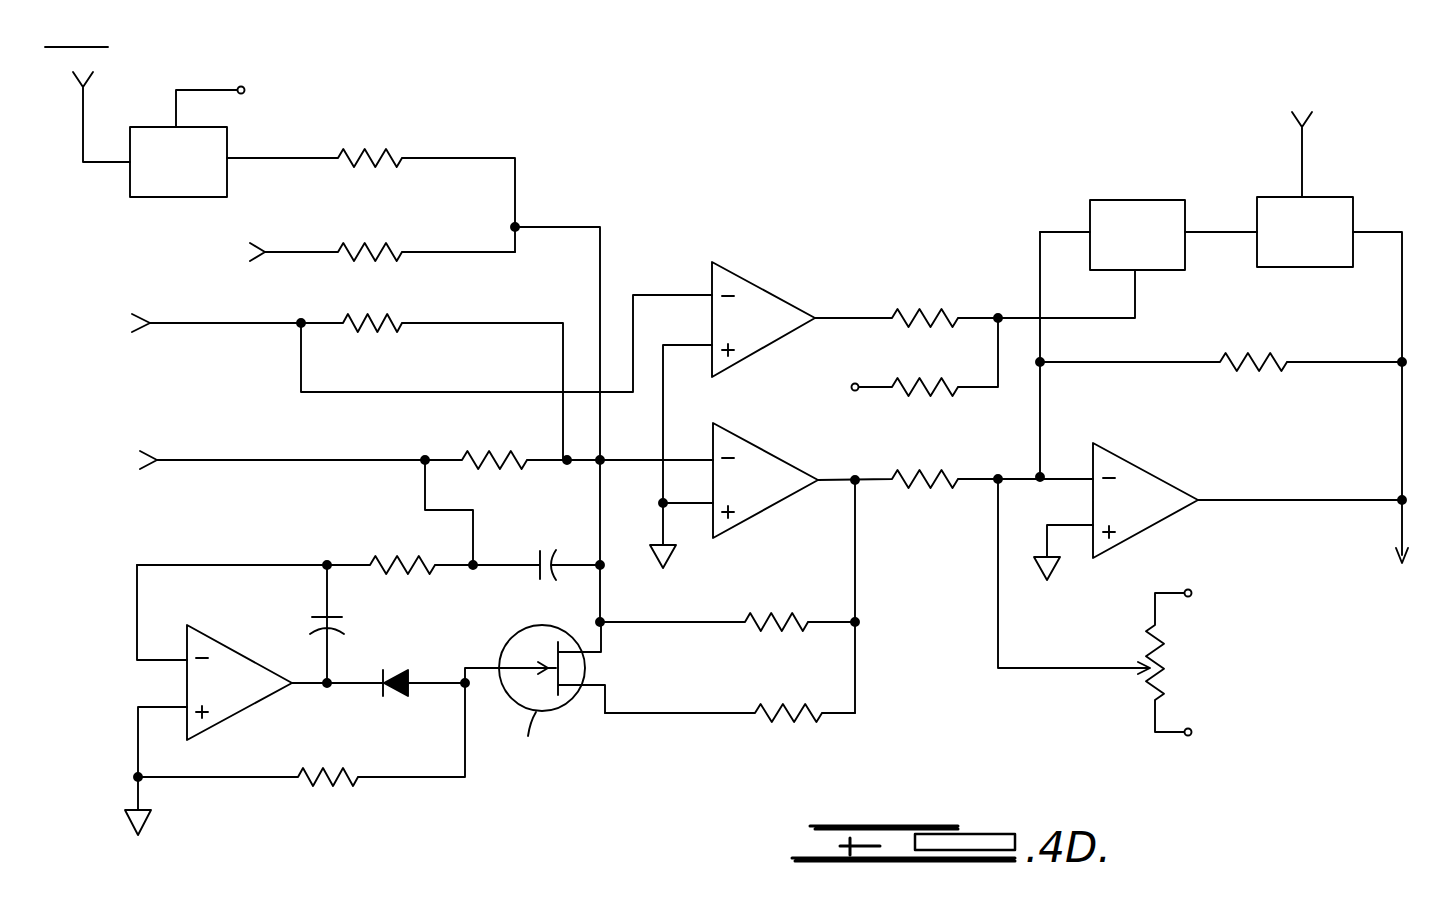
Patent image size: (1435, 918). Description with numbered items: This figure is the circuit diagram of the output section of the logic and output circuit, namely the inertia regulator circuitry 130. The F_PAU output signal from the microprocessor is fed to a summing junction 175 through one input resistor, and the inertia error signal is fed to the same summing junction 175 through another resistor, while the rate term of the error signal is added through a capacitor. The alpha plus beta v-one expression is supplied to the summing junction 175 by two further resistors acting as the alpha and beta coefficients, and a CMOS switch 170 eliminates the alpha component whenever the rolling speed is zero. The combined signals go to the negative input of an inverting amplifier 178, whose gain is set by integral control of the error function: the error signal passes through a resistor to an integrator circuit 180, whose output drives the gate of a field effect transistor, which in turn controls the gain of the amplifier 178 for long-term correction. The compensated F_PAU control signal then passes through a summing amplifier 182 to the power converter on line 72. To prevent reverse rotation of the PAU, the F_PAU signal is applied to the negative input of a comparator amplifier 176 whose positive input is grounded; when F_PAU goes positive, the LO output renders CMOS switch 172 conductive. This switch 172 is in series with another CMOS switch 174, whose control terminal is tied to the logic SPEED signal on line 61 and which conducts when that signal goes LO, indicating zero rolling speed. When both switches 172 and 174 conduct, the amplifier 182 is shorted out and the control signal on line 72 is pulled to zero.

The inertia regulator circuitry 130 is at (752, 189).
The CMOS switch 170 is at (130, 197).
The CMOS switch 172 is at (1140, 199).
The CMOS switch 174 is at (1353, 199).
The line 61 is at (1302, 142).
The summing junction 175 is at (603, 458).
The comparator amplifier 176 is at (752, 279).
The inverting amplifier 178 is at (788, 465).
The integrator circuit 180 is at (423, 751).
The summing amplifier 182 is at (1122, 452).
The line 72 is at (1402, 520).